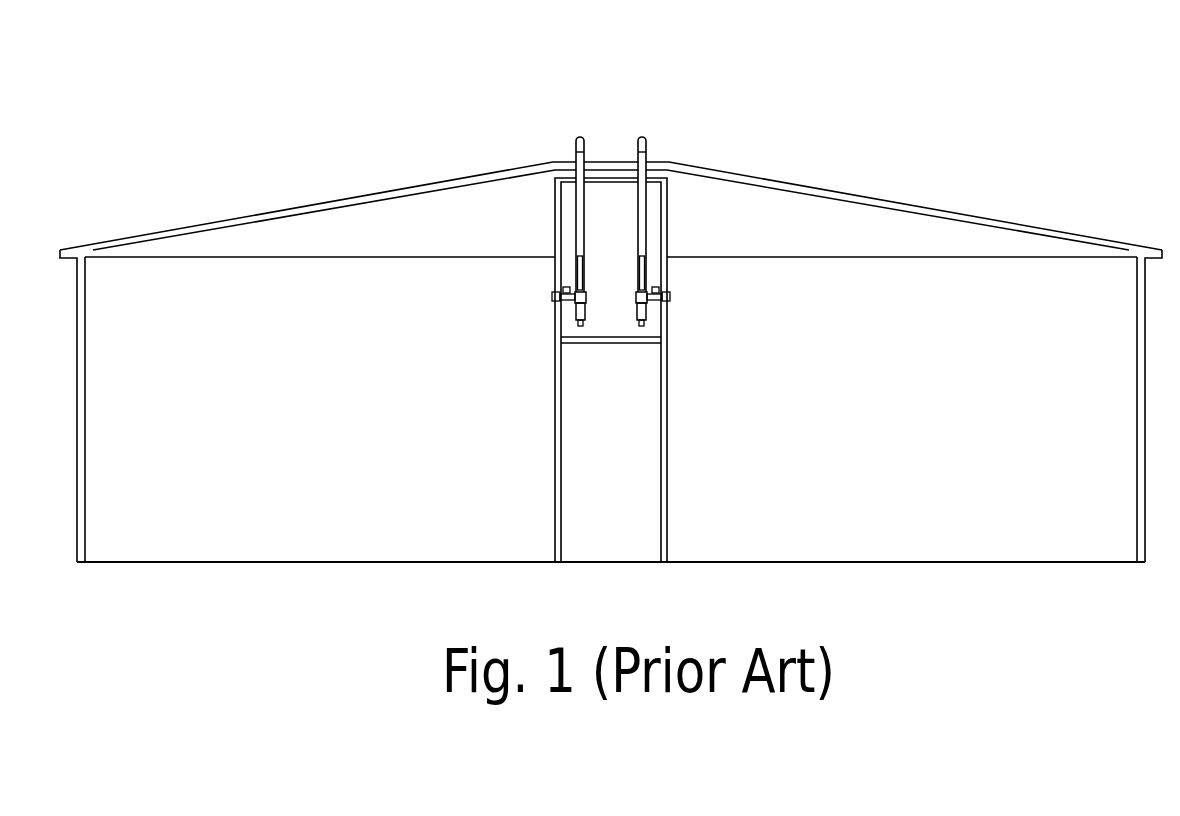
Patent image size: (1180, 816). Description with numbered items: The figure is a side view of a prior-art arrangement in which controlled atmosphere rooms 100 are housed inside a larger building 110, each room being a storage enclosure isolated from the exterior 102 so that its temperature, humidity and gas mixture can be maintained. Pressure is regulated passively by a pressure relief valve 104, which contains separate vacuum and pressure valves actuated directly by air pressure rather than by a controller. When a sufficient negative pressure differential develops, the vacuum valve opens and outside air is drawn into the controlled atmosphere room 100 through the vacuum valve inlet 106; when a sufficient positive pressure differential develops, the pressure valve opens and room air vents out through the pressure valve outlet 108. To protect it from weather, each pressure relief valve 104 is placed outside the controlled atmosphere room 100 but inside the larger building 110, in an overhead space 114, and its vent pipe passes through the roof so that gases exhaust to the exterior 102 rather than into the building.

The controlled atmosphere room 100 is at (351, 400).
The exterior 102 is at (586, 64).
The pressure relief valve 104 is at (560, 228).
The vacuum valve inlet 106 is at (580, 326).
The pressure valve outlet 108 is at (580, 137).
The larger building 110 is at (855, 192).
The overhead space 114 is at (621, 269).